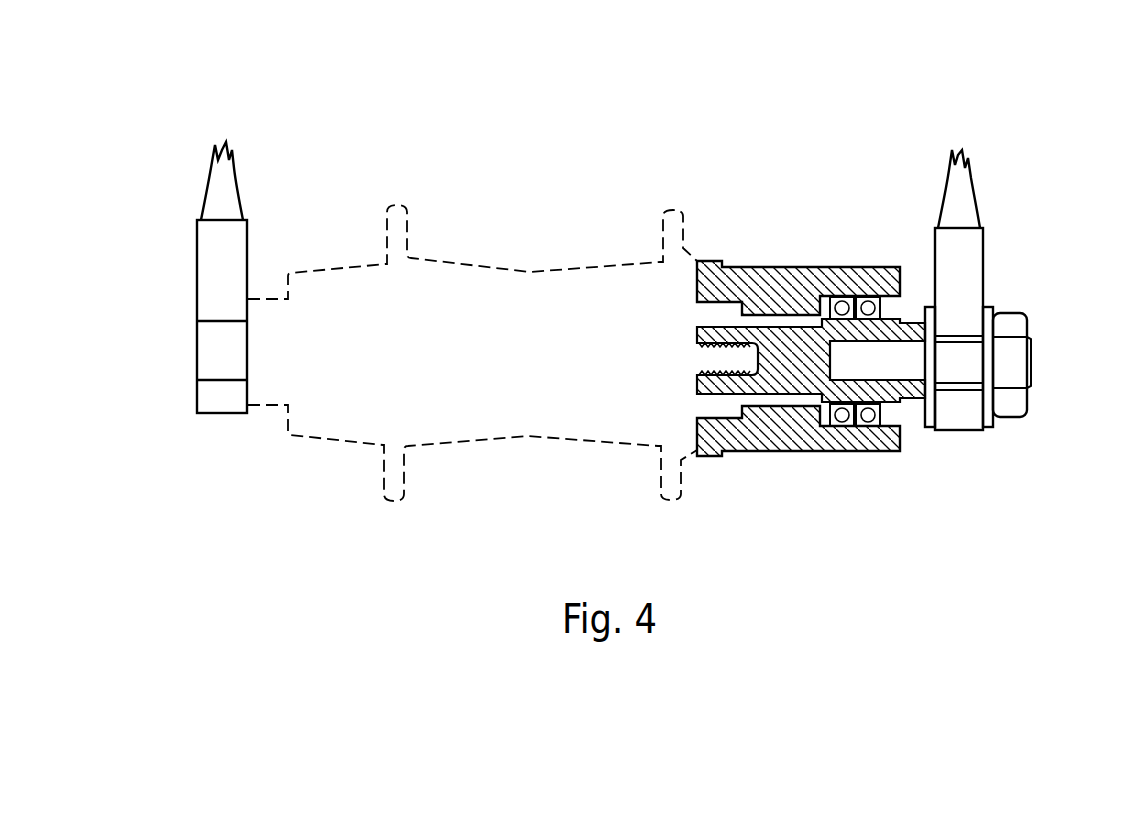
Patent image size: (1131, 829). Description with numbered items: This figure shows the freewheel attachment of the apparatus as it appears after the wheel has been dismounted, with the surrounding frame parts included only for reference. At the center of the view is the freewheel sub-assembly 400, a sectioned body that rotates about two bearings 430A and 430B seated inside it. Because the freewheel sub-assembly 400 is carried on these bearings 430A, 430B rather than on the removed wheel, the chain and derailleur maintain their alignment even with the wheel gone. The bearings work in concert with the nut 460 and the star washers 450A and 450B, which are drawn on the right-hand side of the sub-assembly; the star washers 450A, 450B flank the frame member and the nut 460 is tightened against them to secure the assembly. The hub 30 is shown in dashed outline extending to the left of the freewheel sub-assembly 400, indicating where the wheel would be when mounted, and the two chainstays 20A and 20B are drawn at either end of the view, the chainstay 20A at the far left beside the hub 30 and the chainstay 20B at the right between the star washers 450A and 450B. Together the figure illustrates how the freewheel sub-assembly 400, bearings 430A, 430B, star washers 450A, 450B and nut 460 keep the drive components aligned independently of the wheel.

The chainstay 20A is at (210, 248).
The hub 30 is at (398, 213).
The freewheel sub-assembly 400 is at (782, 268).
The bearing 430A is at (836, 268).
The bearing 430B is at (868, 268).
The chainstay 20B is at (960, 257).
The star washer 450A is at (926, 427).
The star washer 450B is at (986, 400).
The nut 460 is at (1007, 318).